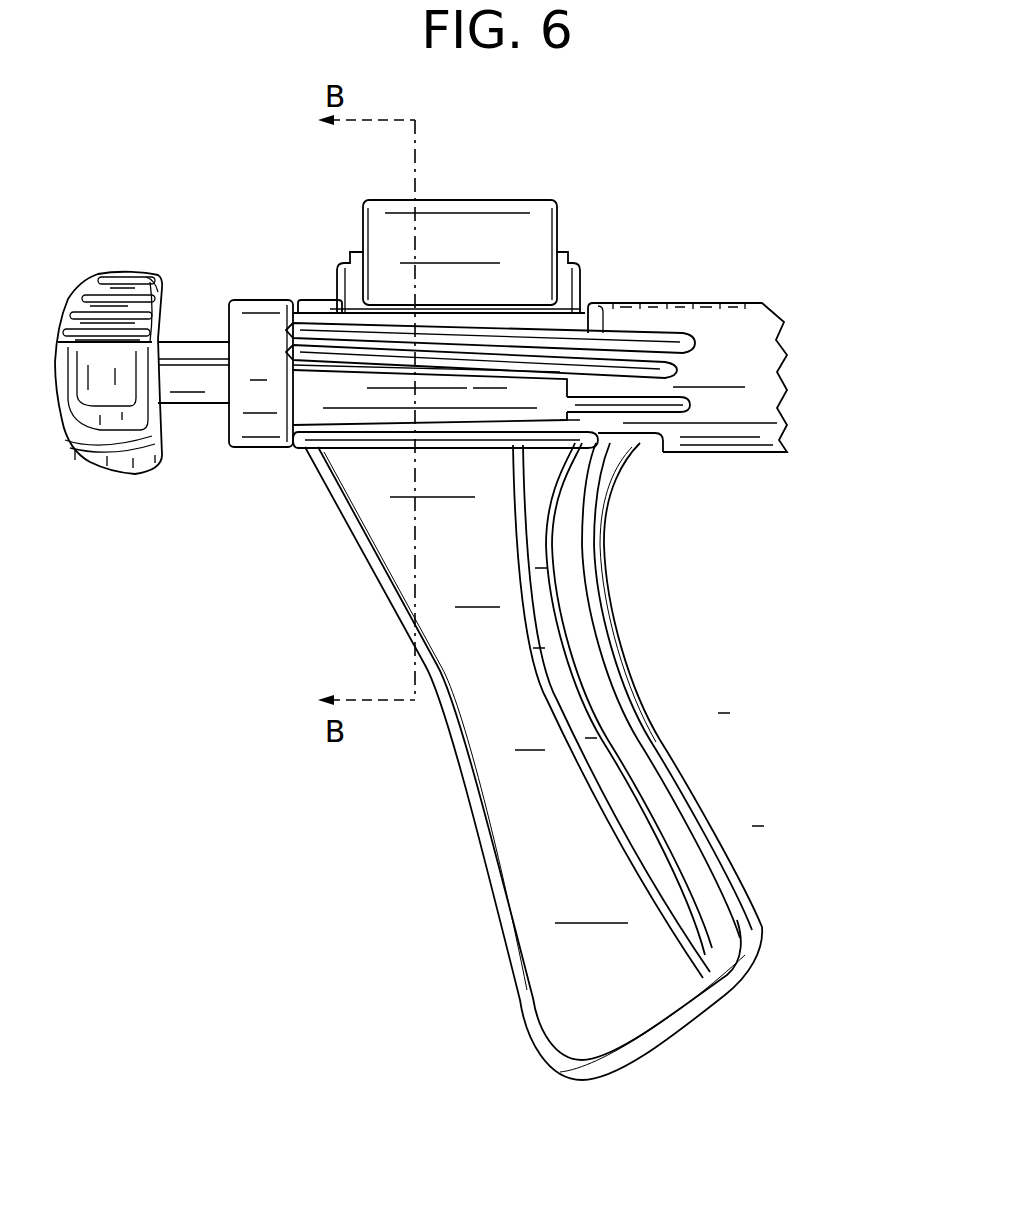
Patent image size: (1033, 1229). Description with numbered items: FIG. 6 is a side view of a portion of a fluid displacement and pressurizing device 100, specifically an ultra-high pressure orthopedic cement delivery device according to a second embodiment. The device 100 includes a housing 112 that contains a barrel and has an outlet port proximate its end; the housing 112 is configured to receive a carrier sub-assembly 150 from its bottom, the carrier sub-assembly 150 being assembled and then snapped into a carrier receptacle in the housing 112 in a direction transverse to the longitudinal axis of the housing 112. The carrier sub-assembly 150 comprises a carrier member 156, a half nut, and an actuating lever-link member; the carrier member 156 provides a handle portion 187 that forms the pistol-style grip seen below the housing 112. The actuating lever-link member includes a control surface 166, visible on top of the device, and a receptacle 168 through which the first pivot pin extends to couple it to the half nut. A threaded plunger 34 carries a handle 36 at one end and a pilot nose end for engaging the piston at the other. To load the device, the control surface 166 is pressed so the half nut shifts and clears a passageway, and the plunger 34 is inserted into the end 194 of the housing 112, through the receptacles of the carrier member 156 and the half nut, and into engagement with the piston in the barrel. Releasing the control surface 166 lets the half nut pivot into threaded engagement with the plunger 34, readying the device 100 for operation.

The device 100 is at (622, 153).
The handle 36 is at (113, 272).
The plunger 34 is at (181, 328).
The end of the housing 194 is at (228, 430).
The control surface 166 is at (470, 220).
The receptacle 168 is at (522, 183).
The housing 112 is at (650, 310).
The carrier sub-assembly 150 is at (326, 503).
The carrier member 156 is at (634, 607).
The handle portion 187 is at (497, 710).